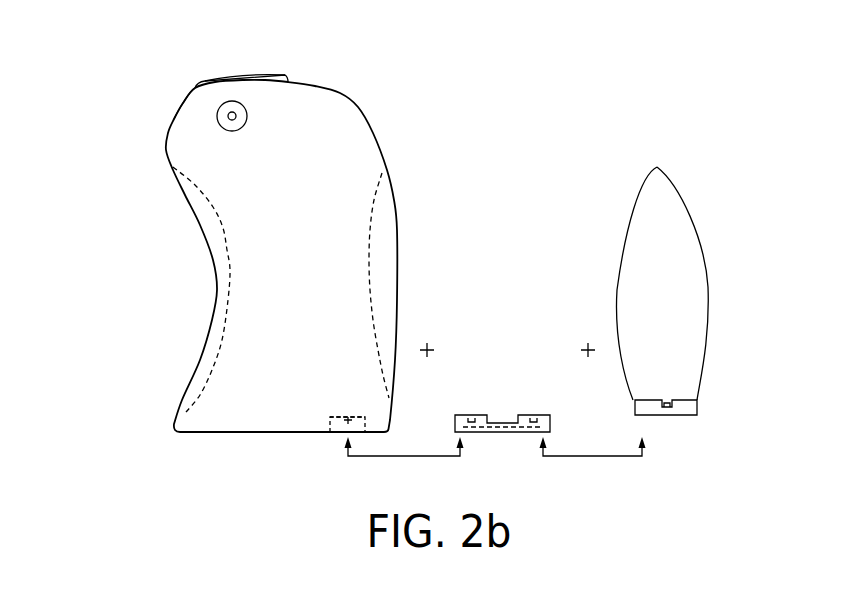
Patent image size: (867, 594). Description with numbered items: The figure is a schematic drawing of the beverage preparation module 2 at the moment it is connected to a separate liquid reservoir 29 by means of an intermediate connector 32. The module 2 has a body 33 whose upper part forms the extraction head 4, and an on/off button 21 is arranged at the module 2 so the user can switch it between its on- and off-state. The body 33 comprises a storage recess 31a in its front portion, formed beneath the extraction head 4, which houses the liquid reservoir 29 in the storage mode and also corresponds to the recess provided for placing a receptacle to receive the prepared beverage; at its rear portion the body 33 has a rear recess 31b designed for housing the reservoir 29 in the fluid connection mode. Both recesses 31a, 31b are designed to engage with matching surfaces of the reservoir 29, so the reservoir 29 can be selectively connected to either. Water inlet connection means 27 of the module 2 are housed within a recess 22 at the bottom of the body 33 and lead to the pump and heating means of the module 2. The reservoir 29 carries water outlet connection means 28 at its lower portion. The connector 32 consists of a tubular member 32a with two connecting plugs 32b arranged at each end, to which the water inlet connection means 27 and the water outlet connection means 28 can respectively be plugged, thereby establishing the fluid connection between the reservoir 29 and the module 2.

The beverage preparation module 2 is at (380, 110).
The extraction head 4 is at (185, 125).
The on/off button 21 is at (229, 101).
The recess 22 is at (330, 418).
The water inlet connection means 27 is at (365, 417).
The water outlet connection means 28 is at (667, 408).
The liquid reservoir 29 is at (672, 192).
The storage recess 31a is at (223, 240).
The rear recess 31b is at (375, 210).
The intermediate connector 32 is at (482, 433).
The tubular member 32a is at (527, 428).
The connecting plugs 32b is at (534, 415).
The body 33 is at (307, 291).